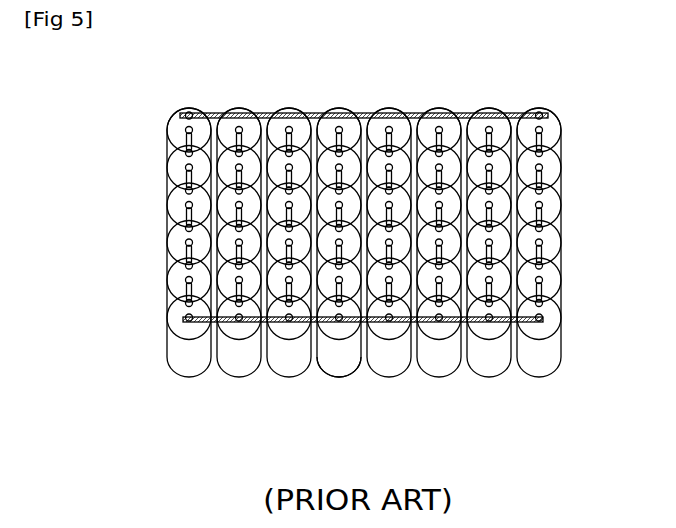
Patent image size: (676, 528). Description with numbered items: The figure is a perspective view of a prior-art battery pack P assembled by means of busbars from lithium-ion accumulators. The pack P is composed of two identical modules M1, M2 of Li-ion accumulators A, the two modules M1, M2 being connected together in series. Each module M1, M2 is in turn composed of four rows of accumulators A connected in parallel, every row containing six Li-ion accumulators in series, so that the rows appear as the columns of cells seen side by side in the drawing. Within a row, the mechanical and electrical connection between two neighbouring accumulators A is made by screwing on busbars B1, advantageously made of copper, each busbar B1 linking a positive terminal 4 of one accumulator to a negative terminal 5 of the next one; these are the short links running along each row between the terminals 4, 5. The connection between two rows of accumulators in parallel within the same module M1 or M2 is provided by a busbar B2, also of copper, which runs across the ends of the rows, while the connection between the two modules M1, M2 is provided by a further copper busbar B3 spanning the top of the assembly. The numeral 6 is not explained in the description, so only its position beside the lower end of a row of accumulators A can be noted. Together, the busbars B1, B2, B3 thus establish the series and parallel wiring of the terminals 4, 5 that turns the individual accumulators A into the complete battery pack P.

The battery pack P is at (315, 282).
The first module M1 is at (226, 282).
The second module M2 is at (463, 381).
The Li-ion accumulator A is at (323, 374).
The positive terminal 4 is at (558, 190).
The negative terminal 5 is at (558, 170).
The cell holder 6 is at (170, 352).
The busbar B1 is at (188, 222).
The busbar B2 is at (170, 327).
The busbar B3 is at (365, 110).